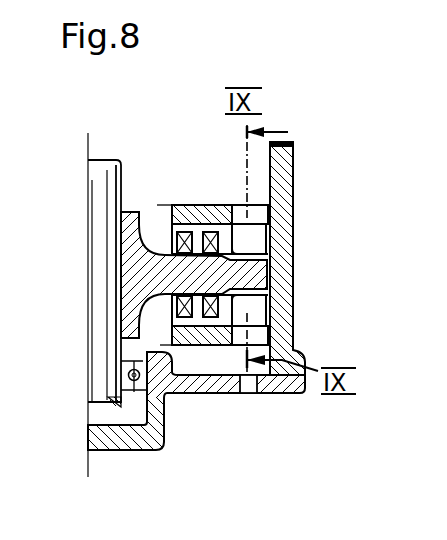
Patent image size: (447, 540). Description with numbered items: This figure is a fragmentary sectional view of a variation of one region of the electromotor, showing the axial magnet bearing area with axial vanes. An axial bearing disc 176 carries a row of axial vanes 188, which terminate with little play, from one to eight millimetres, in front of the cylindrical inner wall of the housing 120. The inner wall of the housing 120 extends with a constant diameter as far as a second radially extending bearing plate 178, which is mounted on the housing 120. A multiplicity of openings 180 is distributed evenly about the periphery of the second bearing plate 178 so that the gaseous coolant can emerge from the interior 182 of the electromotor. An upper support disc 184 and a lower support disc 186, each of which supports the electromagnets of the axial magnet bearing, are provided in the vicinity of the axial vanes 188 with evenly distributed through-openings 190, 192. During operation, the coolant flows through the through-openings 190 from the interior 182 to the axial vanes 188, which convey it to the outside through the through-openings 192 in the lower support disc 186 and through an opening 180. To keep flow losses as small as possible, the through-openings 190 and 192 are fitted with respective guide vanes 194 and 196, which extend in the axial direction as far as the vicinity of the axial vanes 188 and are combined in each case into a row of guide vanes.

The housing 120 is at (287, 155).
The axial bearing disc 176 is at (130, 258).
The second radially extending bearing plate 178 is at (216, 386).
The openings 180 is at (250, 384).
The interior of the electromotor 182 is at (202, 139).
The upper support disc 184 is at (208, 213).
The lower support disc 186 is at (188, 338).
The axial vanes 188 is at (258, 277).
The through-openings 190 is at (258, 213).
The through-openings 192 is at (262, 336).
The guide vanes 194 is at (260, 242).
The guide vanes 196 is at (258, 316).